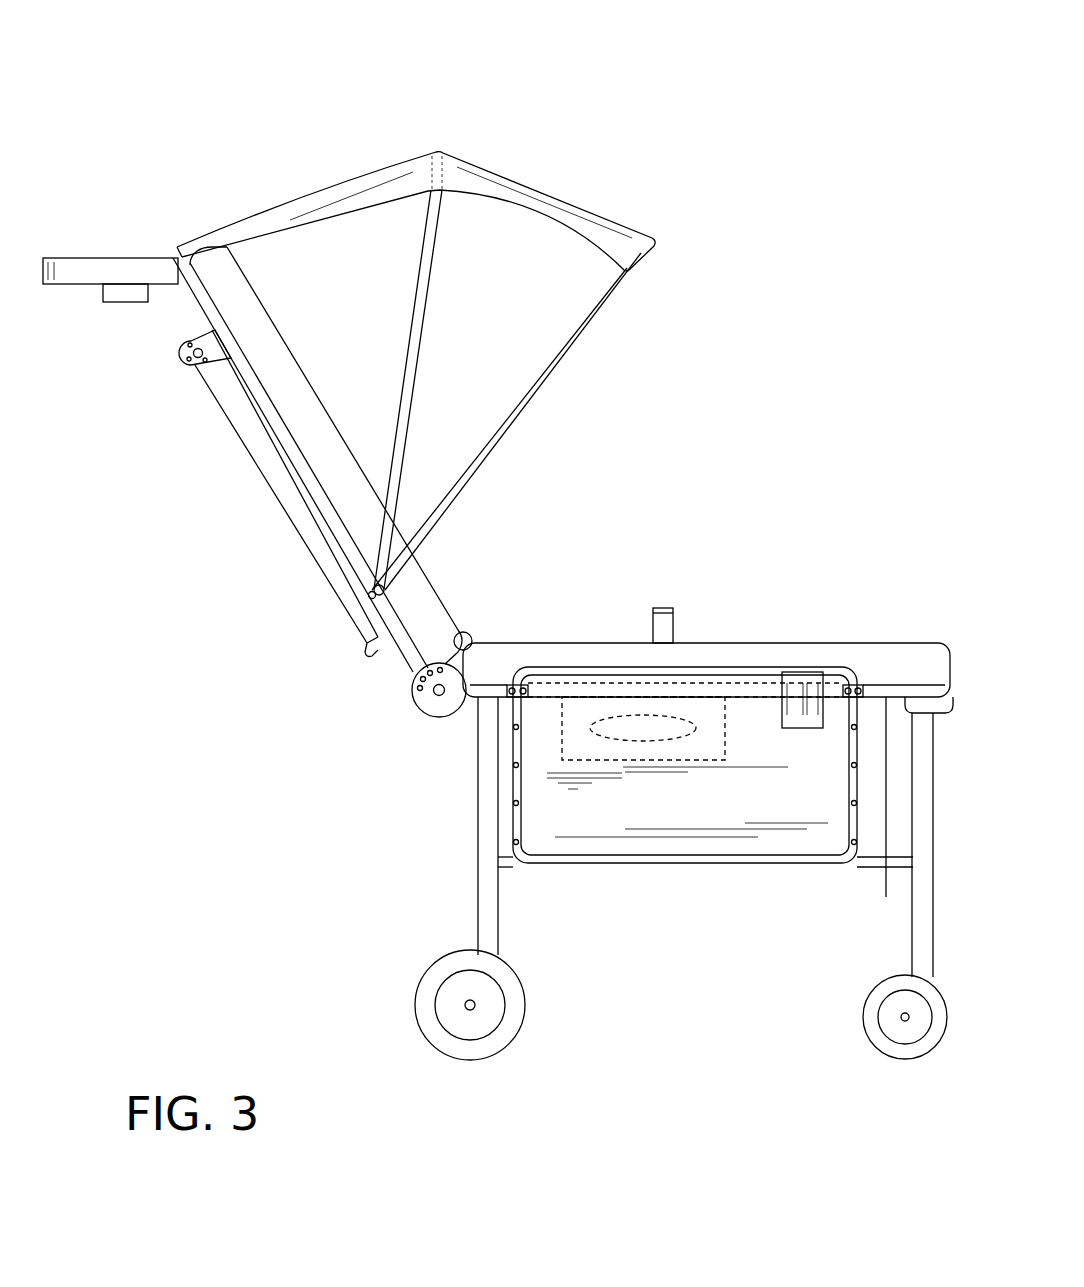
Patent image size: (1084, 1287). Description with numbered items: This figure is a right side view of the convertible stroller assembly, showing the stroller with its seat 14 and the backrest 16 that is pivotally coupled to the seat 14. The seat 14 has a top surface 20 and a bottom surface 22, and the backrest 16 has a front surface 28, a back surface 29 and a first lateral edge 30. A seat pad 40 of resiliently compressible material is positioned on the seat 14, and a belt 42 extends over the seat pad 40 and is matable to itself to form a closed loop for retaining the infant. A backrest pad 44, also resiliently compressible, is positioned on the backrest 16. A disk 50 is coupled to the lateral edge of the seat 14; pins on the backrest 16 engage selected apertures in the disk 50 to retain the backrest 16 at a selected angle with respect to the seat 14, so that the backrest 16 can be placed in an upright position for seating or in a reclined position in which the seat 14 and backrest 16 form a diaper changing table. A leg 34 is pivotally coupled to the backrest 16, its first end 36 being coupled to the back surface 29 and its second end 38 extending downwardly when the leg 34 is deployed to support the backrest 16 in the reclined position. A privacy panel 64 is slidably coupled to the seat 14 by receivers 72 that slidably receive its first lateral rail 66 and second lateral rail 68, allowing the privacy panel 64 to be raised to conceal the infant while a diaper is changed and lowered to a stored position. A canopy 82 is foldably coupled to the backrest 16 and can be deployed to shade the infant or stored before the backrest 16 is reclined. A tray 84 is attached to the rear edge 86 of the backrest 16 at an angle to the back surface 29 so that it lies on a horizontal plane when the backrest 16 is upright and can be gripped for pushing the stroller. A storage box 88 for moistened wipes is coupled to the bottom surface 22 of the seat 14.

The seat 14 is at (957, 697).
The backrest 16 is at (305, 490).
The top surface 20 is at (880, 702).
The bottom surface 22 is at (880, 880).
The front surface 28 is at (405, 615).
The back surface 29 is at (275, 432).
The first lateral edge 30 is at (396, 620).
The leg 34 is at (331, 590).
The first end 36 is at (186, 350).
The second end 38 is at (372, 656).
The seat pad 40 is at (845, 643).
The belt 42 is at (668, 608).
The backrest pad 44 is at (428, 570).
The disk 50 is at (445, 708).
The privacy panel 64 is at (673, 820).
The first lateral rail 66 is at (512, 793).
The second lateral rail 68 is at (853, 712).
The receiver 72 is at (516, 685).
The canopy 82 is at (483, 173).
The tray 84 is at (60, 256).
The rear edge 86 is at (182, 255).
The storage box 88 is at (606, 762).